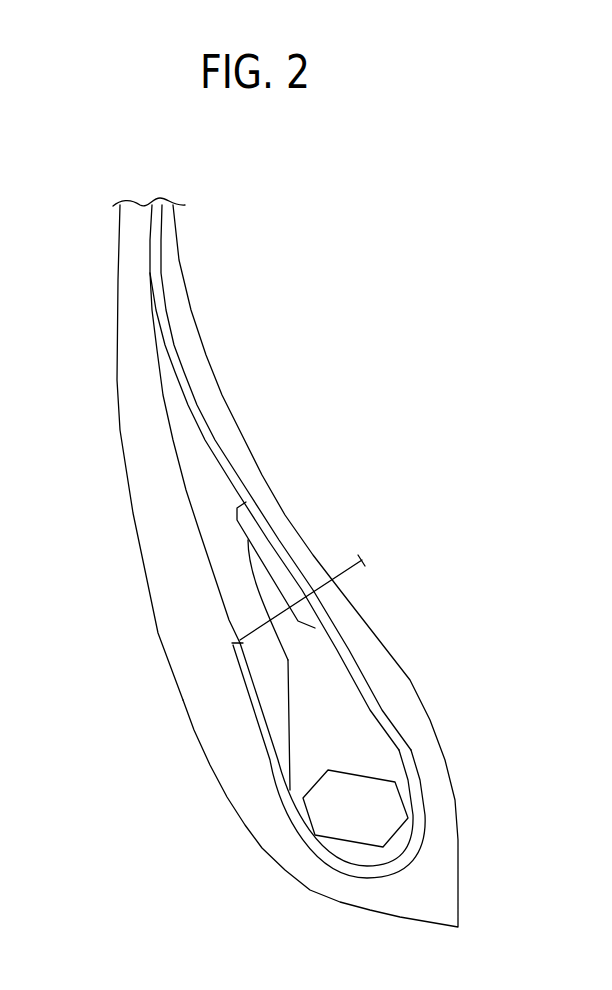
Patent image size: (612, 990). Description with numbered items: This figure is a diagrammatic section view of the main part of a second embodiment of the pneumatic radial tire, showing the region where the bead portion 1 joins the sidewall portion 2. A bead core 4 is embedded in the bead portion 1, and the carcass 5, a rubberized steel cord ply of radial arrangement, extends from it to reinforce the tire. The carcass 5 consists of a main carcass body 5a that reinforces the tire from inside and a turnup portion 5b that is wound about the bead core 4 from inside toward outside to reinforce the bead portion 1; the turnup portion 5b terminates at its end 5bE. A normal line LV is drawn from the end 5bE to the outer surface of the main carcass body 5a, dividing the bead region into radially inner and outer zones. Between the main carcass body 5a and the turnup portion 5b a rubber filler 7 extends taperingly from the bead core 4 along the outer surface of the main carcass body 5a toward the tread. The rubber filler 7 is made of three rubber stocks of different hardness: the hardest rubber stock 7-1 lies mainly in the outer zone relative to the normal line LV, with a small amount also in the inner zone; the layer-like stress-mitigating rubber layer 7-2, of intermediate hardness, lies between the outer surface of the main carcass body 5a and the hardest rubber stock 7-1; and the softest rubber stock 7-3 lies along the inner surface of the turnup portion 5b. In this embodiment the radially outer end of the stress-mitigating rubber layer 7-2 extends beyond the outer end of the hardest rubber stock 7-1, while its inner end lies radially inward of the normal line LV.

The bead portion 1 is at (215, 797).
The sidewall portion 2 is at (116, 261).
The bead core 4 is at (358, 830).
The carcass 5 is at (178, 310).
The main carcass body 5a is at (188, 394).
The turnup portion 5b is at (243, 693).
The end of the turnup portion 5bE is at (232, 643).
The rubber filler 7 is at (345, 712).
The hardest rubber stock 7-1 is at (307, 652).
The stress-mitigating rubber layer 7-2 is at (266, 563).
The softest rubber stock 7-3 is at (205, 478).
The normal line LV is at (361, 559).